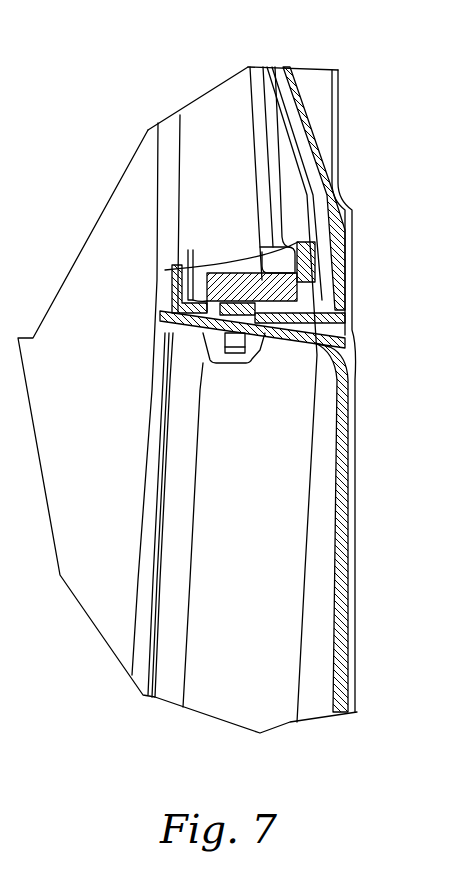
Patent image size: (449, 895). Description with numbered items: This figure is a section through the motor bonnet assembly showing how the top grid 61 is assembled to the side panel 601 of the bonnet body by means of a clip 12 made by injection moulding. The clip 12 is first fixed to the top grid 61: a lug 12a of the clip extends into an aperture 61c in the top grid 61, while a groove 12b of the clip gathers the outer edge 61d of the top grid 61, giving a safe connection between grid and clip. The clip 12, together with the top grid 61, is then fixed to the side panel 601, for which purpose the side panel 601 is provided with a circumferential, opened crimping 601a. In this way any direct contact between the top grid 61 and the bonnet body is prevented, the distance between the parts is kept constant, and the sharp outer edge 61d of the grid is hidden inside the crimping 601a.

The clip 12 is at (255, 273).
The lug 12a is at (248, 67).
The groove 12b is at (197, 282).
The top grid 61 is at (313, 137).
The aperture 61c is at (337, 320).
The outer edge 61d is at (173, 315).
The side panel 601 is at (350, 465).
The crimping 601a is at (172, 278).